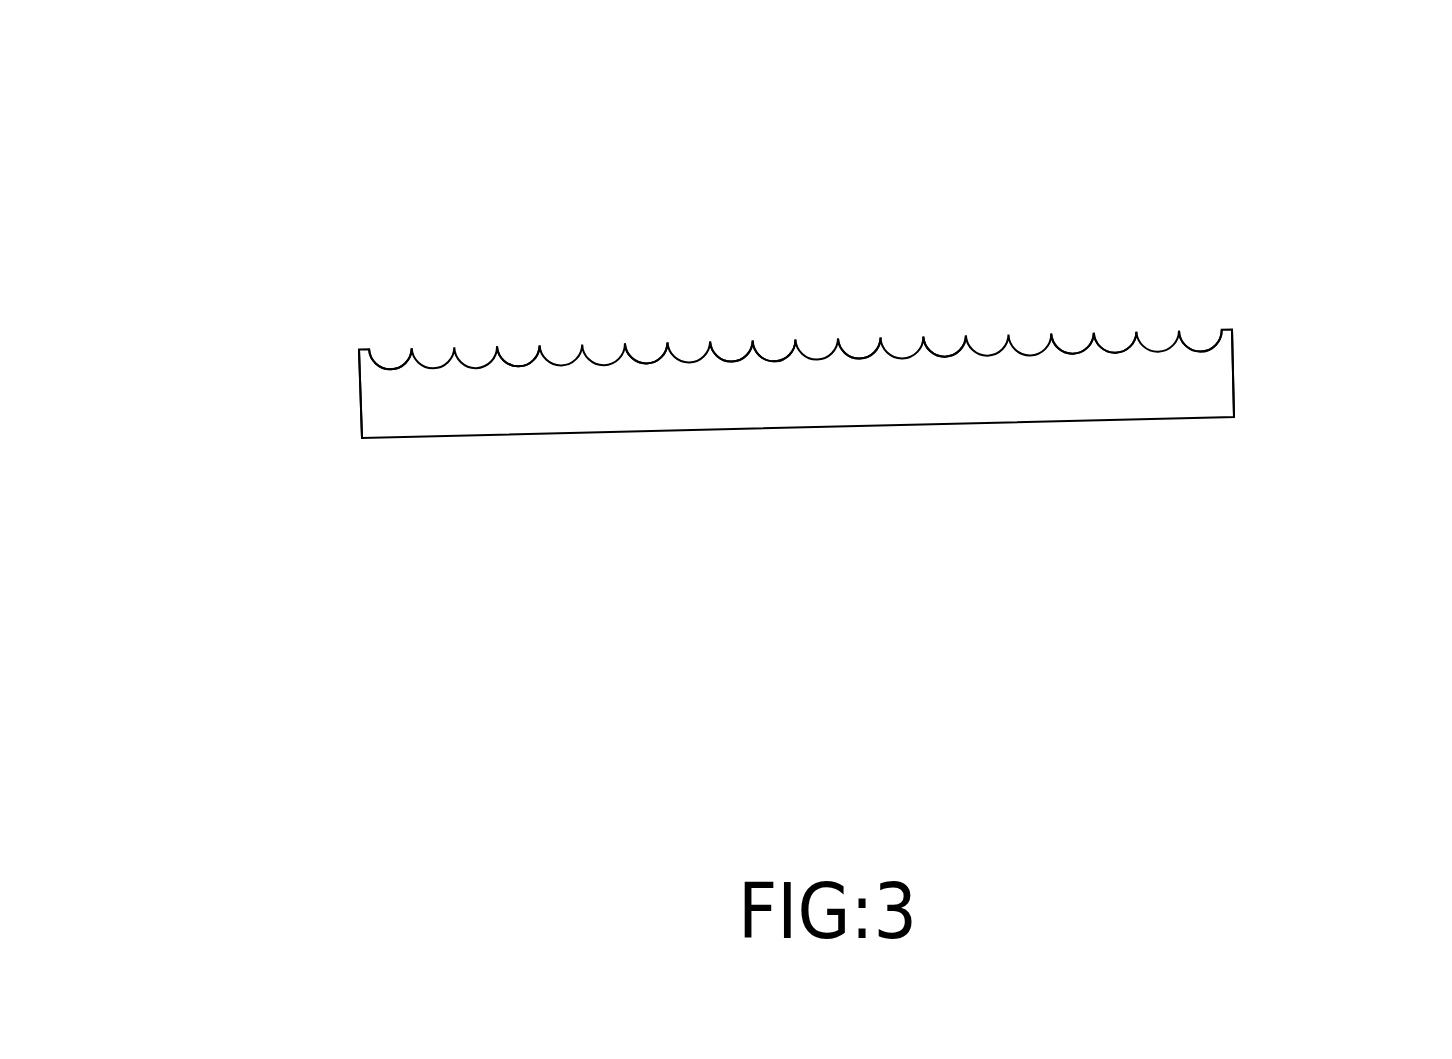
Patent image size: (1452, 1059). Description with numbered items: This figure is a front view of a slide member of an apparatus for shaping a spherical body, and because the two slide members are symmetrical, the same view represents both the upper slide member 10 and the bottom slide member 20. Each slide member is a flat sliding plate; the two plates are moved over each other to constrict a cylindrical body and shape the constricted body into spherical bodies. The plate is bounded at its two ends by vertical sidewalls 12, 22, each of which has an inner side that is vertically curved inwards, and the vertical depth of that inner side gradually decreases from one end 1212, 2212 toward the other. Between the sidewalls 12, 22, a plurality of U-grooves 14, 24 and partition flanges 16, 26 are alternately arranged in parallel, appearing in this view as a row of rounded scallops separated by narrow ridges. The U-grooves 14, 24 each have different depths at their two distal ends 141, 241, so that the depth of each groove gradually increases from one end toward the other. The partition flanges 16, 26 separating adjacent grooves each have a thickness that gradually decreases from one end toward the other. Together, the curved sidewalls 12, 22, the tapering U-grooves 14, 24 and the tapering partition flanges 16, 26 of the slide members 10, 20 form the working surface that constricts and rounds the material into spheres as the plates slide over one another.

The upper slide member 10 is at (796, 513).
The bottom slide member 20 is at (808, 483).
The vertical sidewall 12 is at (794, 374).
The vertical sidewall 22 is at (1333, 337).
The U-groove 14 is at (808, 468).
The U-groove 24 is at (945, 357).
The distal end of U-groove 141 is at (717, 206).
The distal end of U-groove 241 is at (857, 358).
The end of inner side of sidewall 1212 is at (797, 204).
The end of inner side of sidewall 2212 is at (1199, 347).
The partition flange 16 is at (899, 241).
The partition flange 26 is at (1094, 331).